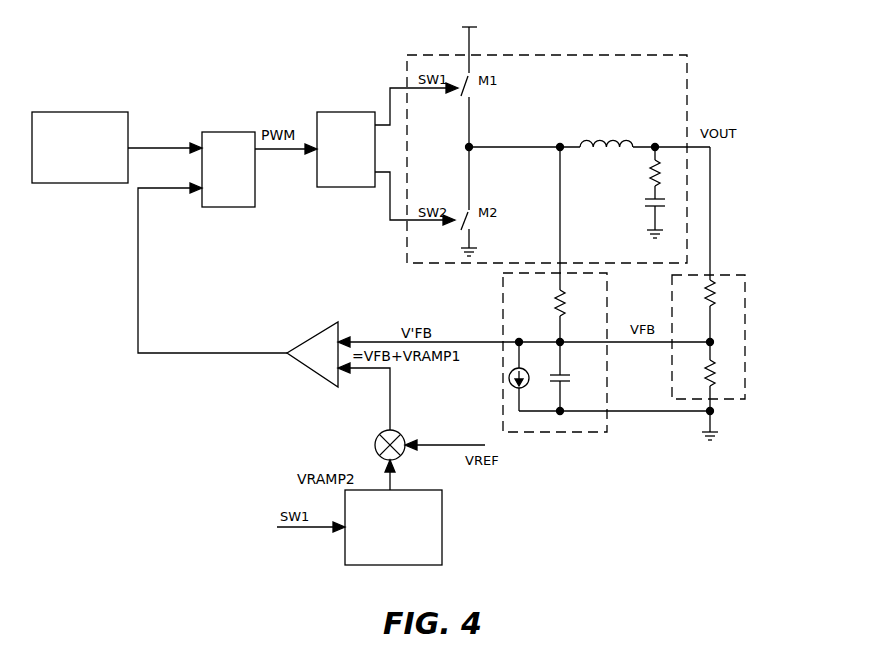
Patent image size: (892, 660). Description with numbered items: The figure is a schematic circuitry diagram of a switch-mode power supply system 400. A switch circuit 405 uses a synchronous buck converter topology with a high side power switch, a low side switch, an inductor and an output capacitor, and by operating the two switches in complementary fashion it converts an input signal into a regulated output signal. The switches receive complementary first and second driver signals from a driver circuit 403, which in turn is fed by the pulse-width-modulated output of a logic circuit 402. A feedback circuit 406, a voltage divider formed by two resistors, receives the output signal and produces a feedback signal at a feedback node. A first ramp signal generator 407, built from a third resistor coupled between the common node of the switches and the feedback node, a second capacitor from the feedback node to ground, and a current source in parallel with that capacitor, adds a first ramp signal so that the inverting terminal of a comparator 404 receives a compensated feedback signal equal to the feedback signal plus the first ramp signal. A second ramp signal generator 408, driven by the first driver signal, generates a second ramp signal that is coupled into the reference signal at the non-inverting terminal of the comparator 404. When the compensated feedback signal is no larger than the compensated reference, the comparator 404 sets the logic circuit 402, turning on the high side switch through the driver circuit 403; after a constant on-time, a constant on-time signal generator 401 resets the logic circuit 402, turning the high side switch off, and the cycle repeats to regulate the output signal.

The switch-mode power supply system 400 is at (752, 73).
The constant on-time signal generator 401 is at (70, 113).
The logic circuit 402 is at (217, 133).
The driver circuit 403 is at (337, 113).
The comparator 404 is at (315, 334).
The switch circuit 405 is at (600, 56).
The feedback circuit 406 is at (745, 311).
The first ramp signal generator 407 is at (503, 414).
The second ramp signal generator 408 is at (345, 545).